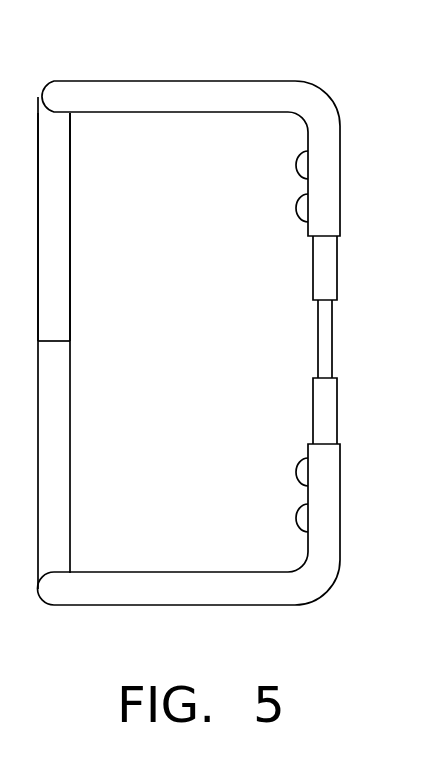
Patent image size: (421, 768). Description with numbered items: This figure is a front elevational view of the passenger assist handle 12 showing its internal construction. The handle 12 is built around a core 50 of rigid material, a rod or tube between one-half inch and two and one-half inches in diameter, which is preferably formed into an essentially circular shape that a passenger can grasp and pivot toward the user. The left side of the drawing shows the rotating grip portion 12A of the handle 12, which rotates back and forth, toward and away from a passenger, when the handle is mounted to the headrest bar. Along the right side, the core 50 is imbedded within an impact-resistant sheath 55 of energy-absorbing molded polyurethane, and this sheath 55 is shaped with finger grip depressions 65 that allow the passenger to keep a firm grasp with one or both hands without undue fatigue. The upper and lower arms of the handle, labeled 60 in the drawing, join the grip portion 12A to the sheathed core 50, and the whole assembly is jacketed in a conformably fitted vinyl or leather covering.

The passenger assist handle 12 is at (147, 81).
The grip portion 12A is at (71, 295).
The core 50 is at (323, 353).
The sheath 55 is at (323, 282).
The arm 60 is at (188, 113).
The finger grip depressions 65 is at (303, 187).